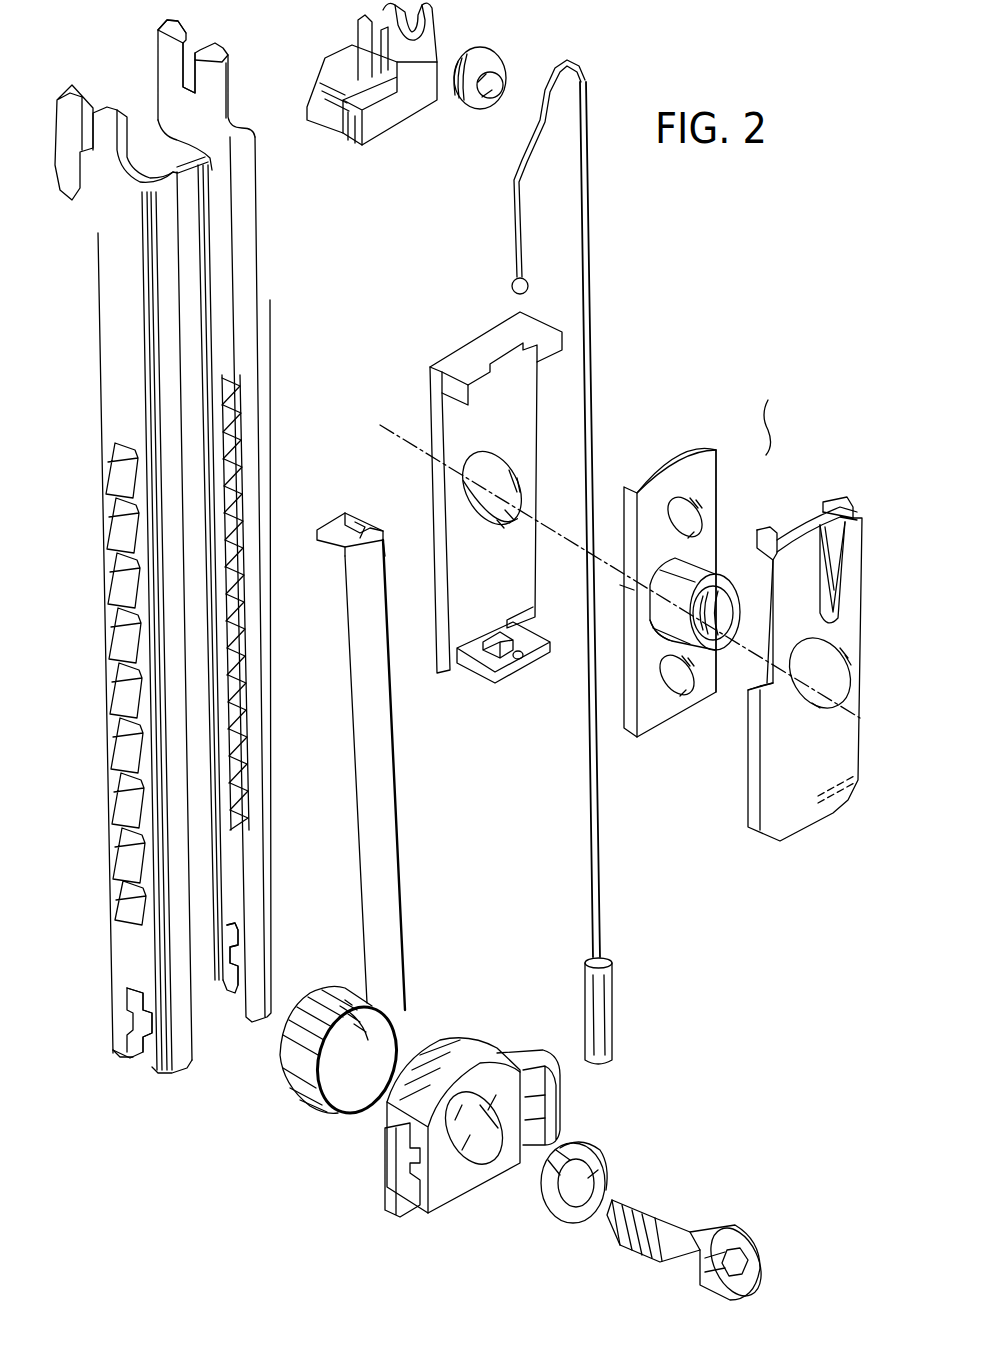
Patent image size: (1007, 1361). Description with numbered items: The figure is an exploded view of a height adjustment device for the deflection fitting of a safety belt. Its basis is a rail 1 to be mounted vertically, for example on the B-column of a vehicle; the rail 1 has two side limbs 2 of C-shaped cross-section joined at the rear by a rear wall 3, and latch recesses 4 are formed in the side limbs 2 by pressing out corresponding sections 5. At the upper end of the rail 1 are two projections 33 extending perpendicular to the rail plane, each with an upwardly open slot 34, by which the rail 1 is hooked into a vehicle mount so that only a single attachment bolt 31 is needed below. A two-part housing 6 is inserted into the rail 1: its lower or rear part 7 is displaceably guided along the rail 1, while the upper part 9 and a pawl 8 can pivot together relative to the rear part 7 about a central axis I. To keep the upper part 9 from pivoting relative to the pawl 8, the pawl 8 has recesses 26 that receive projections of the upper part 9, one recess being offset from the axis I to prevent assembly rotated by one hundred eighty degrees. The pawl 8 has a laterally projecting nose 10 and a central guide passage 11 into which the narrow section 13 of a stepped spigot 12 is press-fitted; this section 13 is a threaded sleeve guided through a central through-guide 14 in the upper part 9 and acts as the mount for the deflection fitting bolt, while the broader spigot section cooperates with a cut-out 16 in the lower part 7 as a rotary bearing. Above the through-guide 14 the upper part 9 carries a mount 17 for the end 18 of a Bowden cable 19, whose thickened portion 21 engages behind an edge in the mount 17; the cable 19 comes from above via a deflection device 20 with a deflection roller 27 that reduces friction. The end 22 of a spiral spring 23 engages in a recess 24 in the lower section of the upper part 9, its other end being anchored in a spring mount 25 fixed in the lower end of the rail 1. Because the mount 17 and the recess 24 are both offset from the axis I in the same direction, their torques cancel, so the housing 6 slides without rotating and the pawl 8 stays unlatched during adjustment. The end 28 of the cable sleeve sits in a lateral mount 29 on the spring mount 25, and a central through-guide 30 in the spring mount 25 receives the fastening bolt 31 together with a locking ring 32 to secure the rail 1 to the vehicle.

The rail 1 is at (250, 332).
The side limbs 2 is at (120, 372).
The rear wall 3 is at (196, 1000).
The latch recesses 4 is at (240, 508).
The pressed-out sections 5 is at (110, 636).
The two-part housing 6 is at (766, 455).
The lower or rear part of the housing 7 is at (447, 418).
The pawl 8 is at (672, 488).
The upper or top part of the housing 9 is at (808, 812).
The nose 10 is at (716, 690).
The central guide passage 11 is at (692, 555).
The stepped spigot 12 is at (656, 636).
The narrow section 13 is at (702, 578).
The central through-guide 14 is at (848, 665).
The cut-out 16 is at (520, 480).
The mount 17 is at (842, 605).
The end of the Bowden cable 18 is at (515, 246).
The Bowden cable 19 is at (592, 332).
The deflection device 20 is at (393, 105).
The thickened portion 21 is at (510, 287).
The end of the spiral spring 22 is at (343, 530).
The spiral spring 23 is at (372, 820).
The recess 24 is at (862, 790).
The spring mount 25 is at (468, 1042).
The recesses 26 is at (697, 515).
The deflection roller 27 is at (475, 108).
The end of the sleeve 28 is at (603, 997).
The mount 29 is at (555, 1103).
The central through-guide 30 is at (478, 1152).
The fastening bolt 31 is at (678, 1233).
The locking ring 32 is at (598, 1172).
The projections 33 is at (160, 52).
The slot 34 is at (190, 58).
The central axis I is at (853, 713).